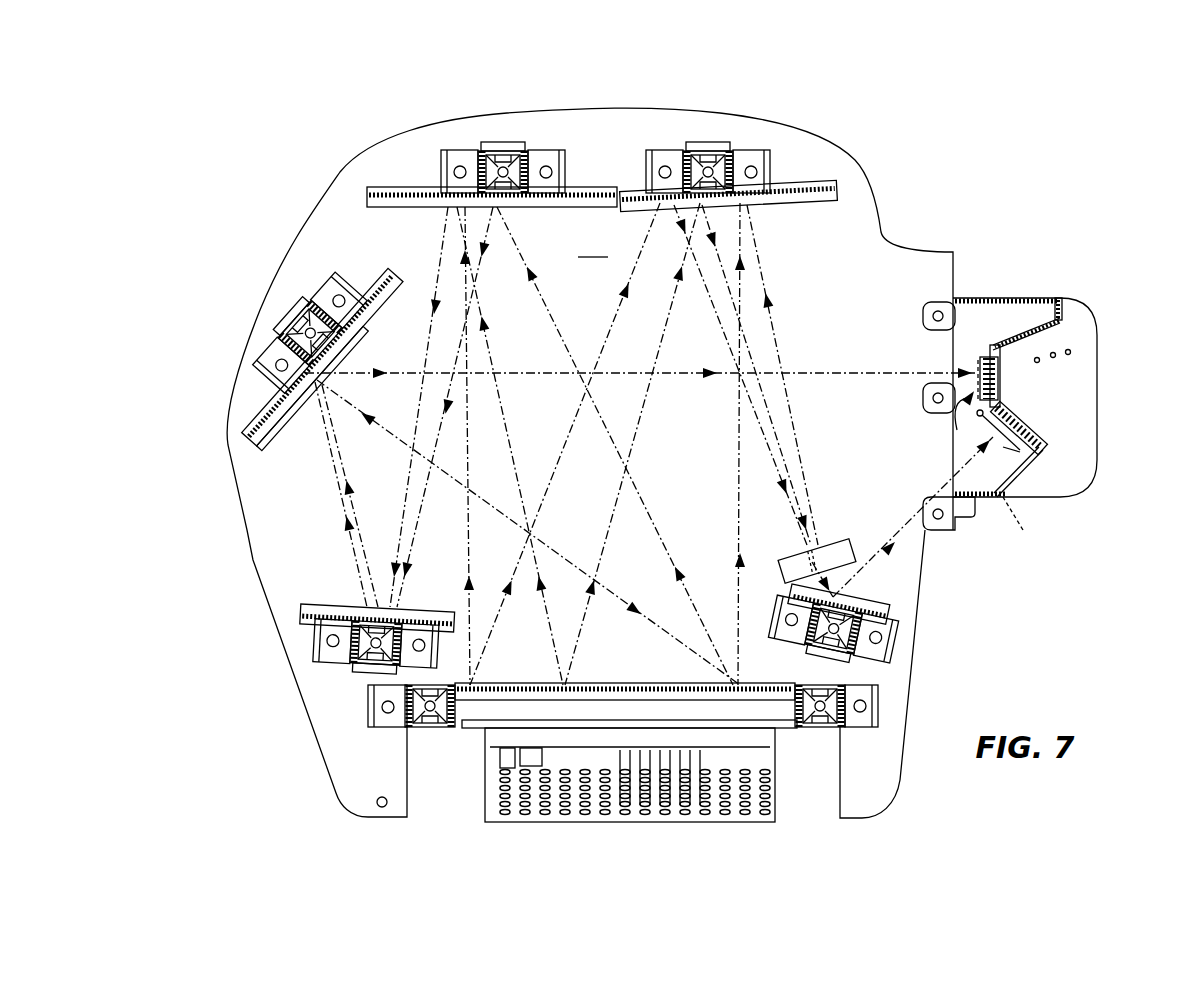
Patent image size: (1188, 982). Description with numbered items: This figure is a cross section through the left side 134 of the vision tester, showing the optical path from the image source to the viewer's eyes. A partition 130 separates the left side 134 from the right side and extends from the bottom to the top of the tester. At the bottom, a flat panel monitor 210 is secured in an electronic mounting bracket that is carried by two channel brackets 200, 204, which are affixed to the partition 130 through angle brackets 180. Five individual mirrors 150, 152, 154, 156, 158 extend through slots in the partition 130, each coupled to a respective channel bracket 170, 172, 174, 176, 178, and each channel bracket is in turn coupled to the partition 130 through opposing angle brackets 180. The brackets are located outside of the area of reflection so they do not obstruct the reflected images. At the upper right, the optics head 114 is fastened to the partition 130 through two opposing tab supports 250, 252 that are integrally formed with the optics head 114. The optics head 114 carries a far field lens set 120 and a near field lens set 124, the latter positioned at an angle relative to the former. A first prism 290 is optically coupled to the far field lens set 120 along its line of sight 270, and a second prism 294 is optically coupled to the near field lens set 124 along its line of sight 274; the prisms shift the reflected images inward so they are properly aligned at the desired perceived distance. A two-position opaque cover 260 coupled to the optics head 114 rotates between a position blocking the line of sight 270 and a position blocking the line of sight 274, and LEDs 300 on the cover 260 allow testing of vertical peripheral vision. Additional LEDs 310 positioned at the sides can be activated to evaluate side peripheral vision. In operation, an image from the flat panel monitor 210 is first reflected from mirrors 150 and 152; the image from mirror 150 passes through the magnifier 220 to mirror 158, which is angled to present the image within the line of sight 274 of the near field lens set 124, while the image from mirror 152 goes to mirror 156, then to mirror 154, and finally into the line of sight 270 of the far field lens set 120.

The optics head 114 is at (1096, 335).
The far field lens set 120 is at (1000, 378).
The near field lens set 124 is at (1030, 423).
The partition 130 is at (808, 128).
The left side 134 is at (593, 245).
The mirror 150 is at (630, 190).
The mirror 152 is at (392, 187).
The mirror 154 is at (270, 438).
The mirror 156 is at (317, 616).
The mirror 158 is at (862, 610).
The channel bracket 170 is at (718, 150).
The channel bracket 172 is at (512, 150).
The channel bracket 174 is at (293, 332).
The channel bracket 176 is at (360, 670).
The channel bracket 178 is at (850, 650).
The angle bracket 180 is at (858, 728).
The channel bracket 200 is at (808, 728).
The channel bracket 204 is at (428, 728).
The flat panel monitor 210 is at (517, 685).
The magnifier 220 is at (830, 537).
The tab support 250 is at (963, 318).
The tab support 252 is at (940, 402).
The two-position opaque cover 260 is at (1025, 460).
The line of sight 270 is at (866, 360).
The line of sight 274 is at (986, 528).
The first prism 290 is at (988, 355).
The second prism 294 is at (1040, 447).
The LEDs 300 is at (1003, 447).
The LEDs 310 is at (1037, 360).